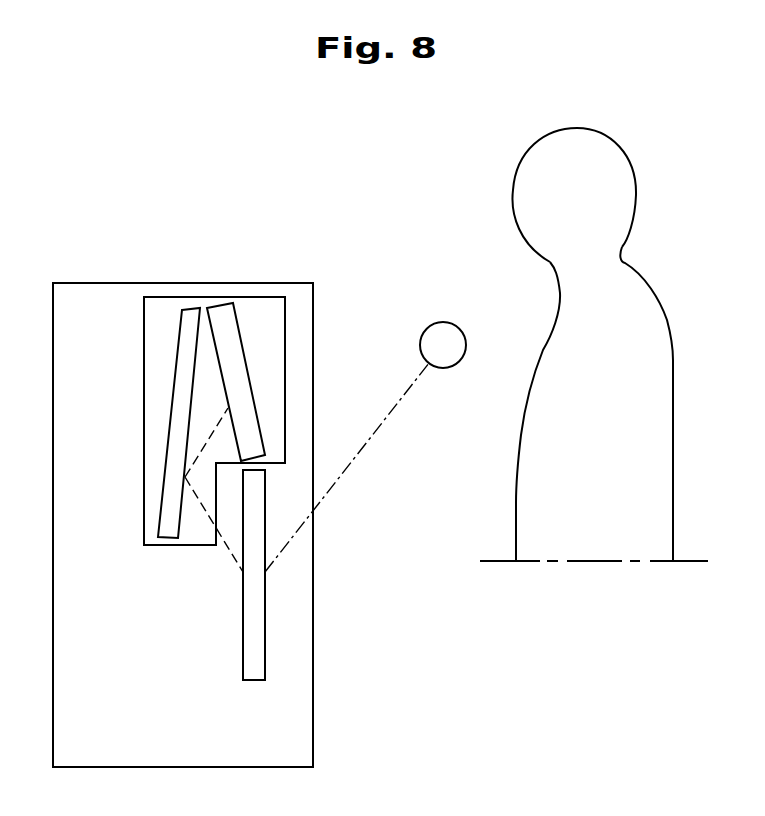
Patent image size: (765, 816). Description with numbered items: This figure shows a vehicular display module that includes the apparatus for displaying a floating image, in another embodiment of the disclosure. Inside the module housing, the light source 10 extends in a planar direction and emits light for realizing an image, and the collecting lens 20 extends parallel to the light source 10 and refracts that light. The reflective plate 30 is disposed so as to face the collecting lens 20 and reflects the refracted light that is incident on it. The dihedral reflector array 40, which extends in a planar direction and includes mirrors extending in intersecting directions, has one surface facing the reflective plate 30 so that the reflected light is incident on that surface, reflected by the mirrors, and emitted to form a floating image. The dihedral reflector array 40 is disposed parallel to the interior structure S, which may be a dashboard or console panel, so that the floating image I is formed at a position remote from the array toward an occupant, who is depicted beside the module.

The reflective plate 30 is at (192, 317).
The light source 10 is at (247, 326).
The collecting lens 20 is at (220, 313).
The dihedral reflector array 40 is at (347, 575).
The interior structure S is at (255, 646).
The image / eye point I is at (438, 337).